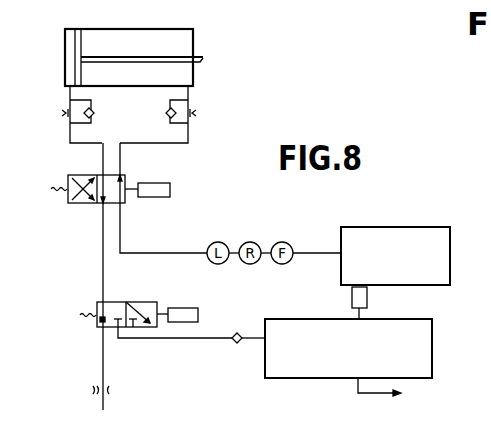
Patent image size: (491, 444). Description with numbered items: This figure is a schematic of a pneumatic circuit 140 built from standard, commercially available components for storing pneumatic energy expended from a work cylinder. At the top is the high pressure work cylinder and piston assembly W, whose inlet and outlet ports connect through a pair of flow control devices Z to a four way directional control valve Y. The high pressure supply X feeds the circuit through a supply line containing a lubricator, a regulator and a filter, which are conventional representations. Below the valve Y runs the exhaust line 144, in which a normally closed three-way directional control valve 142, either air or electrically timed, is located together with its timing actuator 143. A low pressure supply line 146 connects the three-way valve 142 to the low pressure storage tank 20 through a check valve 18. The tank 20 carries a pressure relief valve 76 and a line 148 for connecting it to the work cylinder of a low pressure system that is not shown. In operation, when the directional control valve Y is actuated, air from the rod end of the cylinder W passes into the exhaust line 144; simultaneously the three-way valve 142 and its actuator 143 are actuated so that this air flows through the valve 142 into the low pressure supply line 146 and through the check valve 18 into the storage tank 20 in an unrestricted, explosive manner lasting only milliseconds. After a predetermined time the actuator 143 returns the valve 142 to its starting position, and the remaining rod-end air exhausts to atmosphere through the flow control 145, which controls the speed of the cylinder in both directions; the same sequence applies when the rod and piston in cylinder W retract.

The work cylinder and piston assembly W is at (92, 29).
The flow control devices Z is at (70, 125).
The four way directional control valve Y is at (68, 176).
The high pressure source or supply X is at (453, 240).
The exhaust line 144 is at (102, 238).
The three-way directional control valve 142 is at (157, 302).
The timing actuator 143 is at (182, 308).
The pneumatic circuit 140 is at (74, 322).
The low pressure supply line 146 is at (173, 338).
The flow control 145 is at (108, 388).
The check valve 18 is at (237, 344).
The pressure relief valve 76 is at (352, 296).
The low pressure storage tank 20 is at (432, 341).
The line 148 is at (358, 385).